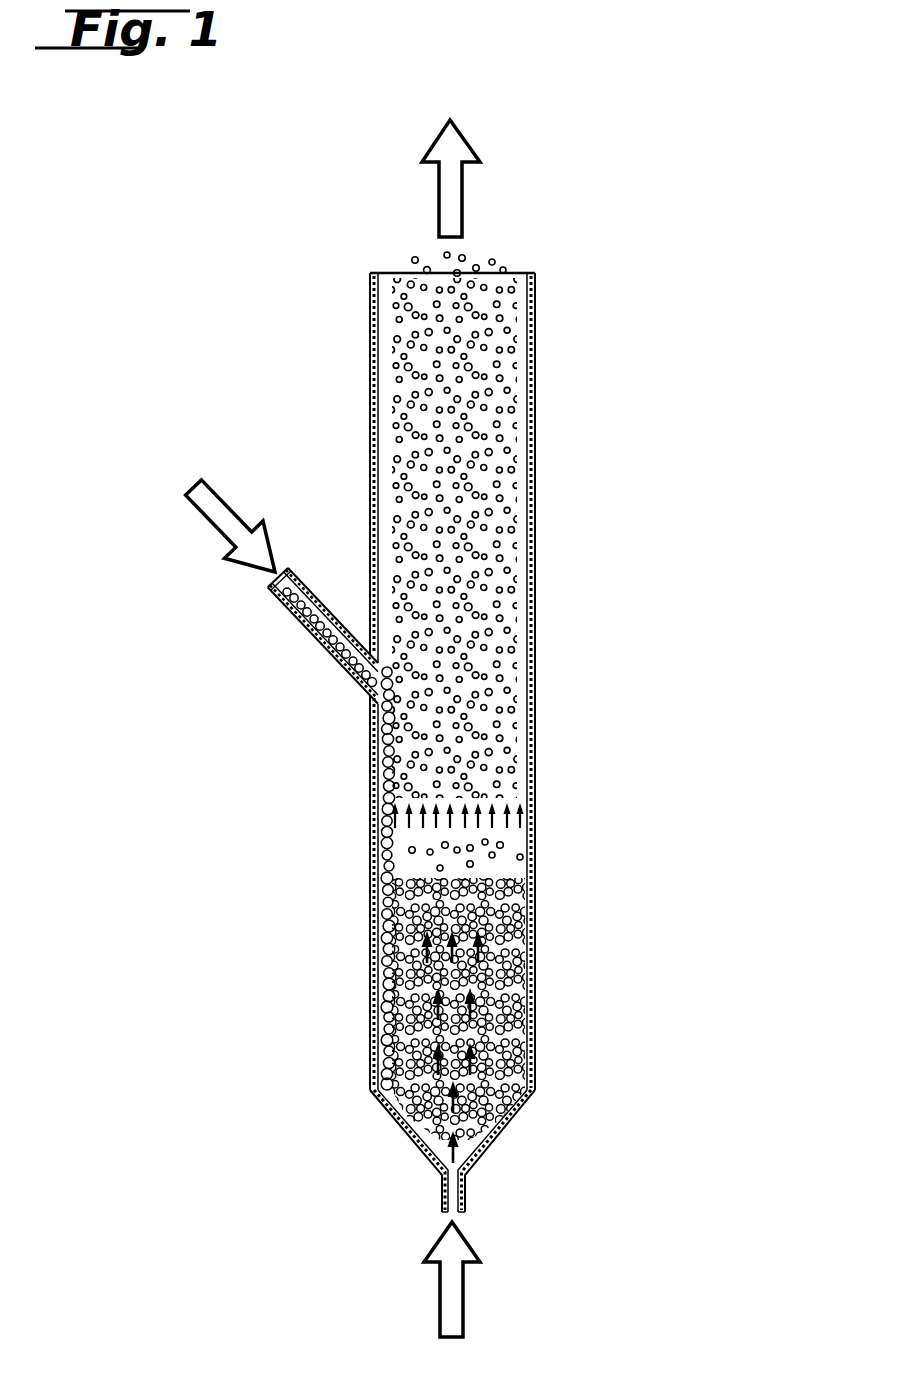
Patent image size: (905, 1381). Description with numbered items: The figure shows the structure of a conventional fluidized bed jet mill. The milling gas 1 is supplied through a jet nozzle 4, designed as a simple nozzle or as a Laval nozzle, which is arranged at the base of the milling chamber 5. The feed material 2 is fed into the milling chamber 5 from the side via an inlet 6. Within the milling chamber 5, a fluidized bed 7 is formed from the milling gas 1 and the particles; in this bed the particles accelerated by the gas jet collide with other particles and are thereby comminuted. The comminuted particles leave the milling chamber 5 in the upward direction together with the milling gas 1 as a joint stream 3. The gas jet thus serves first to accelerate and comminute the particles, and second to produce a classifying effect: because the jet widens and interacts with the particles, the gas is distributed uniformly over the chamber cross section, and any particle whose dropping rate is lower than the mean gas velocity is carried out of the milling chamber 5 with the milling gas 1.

The milling gas 1 is at (453, 1302).
The feed material 2 is at (217, 512).
The joint stream 3 is at (452, 205).
The jet nozzle 4 is at (455, 1193).
The milling chamber 5 is at (523, 988).
The inlet 6 is at (317, 640).
The fluidized bed 7 is at (525, 947).